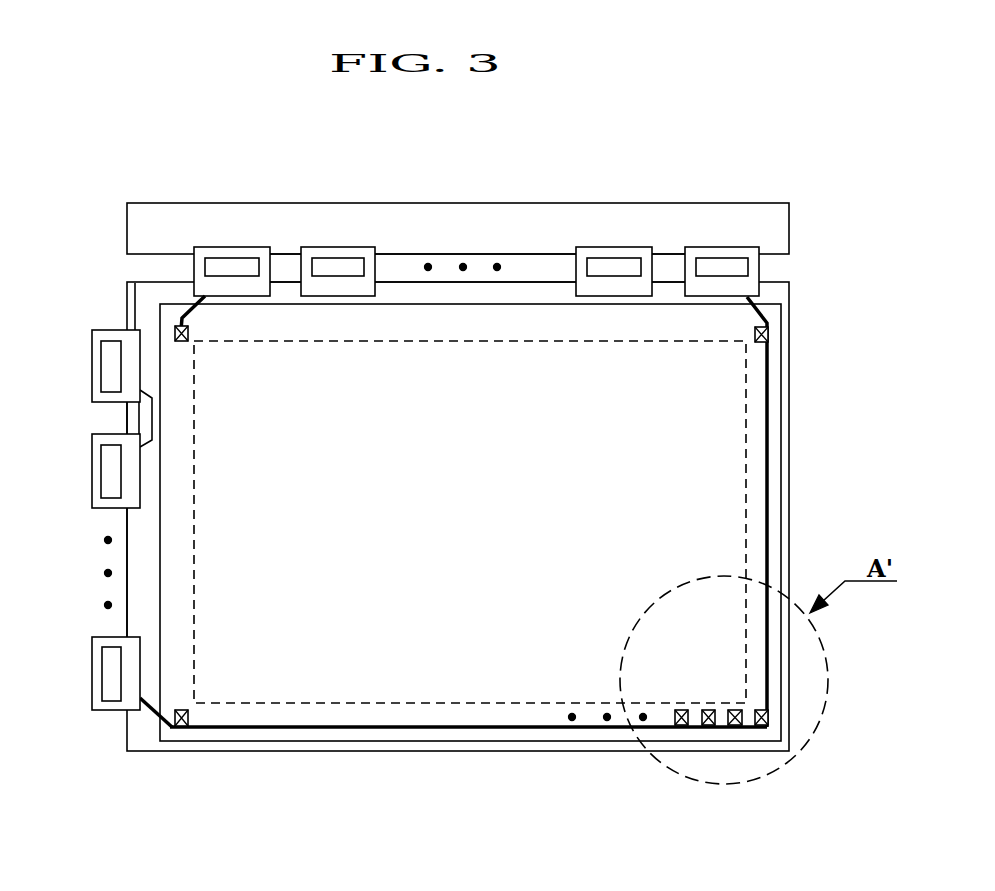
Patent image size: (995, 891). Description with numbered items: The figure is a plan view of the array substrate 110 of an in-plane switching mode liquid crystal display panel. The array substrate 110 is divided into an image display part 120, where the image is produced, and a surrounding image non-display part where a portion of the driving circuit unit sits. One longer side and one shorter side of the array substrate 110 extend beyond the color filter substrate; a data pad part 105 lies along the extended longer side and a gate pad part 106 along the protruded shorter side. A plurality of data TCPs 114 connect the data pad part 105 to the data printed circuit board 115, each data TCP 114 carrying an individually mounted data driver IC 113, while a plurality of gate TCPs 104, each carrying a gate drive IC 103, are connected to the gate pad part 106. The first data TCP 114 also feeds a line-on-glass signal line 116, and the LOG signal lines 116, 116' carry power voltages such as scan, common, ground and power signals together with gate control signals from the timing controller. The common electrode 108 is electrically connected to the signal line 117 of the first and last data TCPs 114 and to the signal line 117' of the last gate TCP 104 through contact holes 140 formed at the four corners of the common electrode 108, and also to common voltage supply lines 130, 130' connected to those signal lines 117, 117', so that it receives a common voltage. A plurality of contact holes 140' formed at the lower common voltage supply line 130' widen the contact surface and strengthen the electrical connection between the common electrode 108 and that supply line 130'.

The gate drive IC 103 is at (102, 472).
The gate TCP 104 is at (92, 361).
The data pad part 105 is at (400, 292).
The gate pad part 106 is at (138, 518).
The common electrode 108 is at (552, 305).
The array substrate 110 is at (783, 293).
The data driver IC 113 is at (338, 258).
The data TCP 114 is at (240, 247).
The data printed circuit board 115 is at (194, 209).
The LOG signal line 116 is at (77, 306).
The LOG signal line 116' is at (85, 418).
The signal line 117 is at (132, 278).
The signal line 117' is at (141, 758).
The image display part 120 is at (746, 548).
The common voltage supply line 130 is at (797, 512).
The common voltage supply line 130' is at (468, 772).
The contact hole 140 is at (182, 764).
The contact holes 140' is at (669, 767).